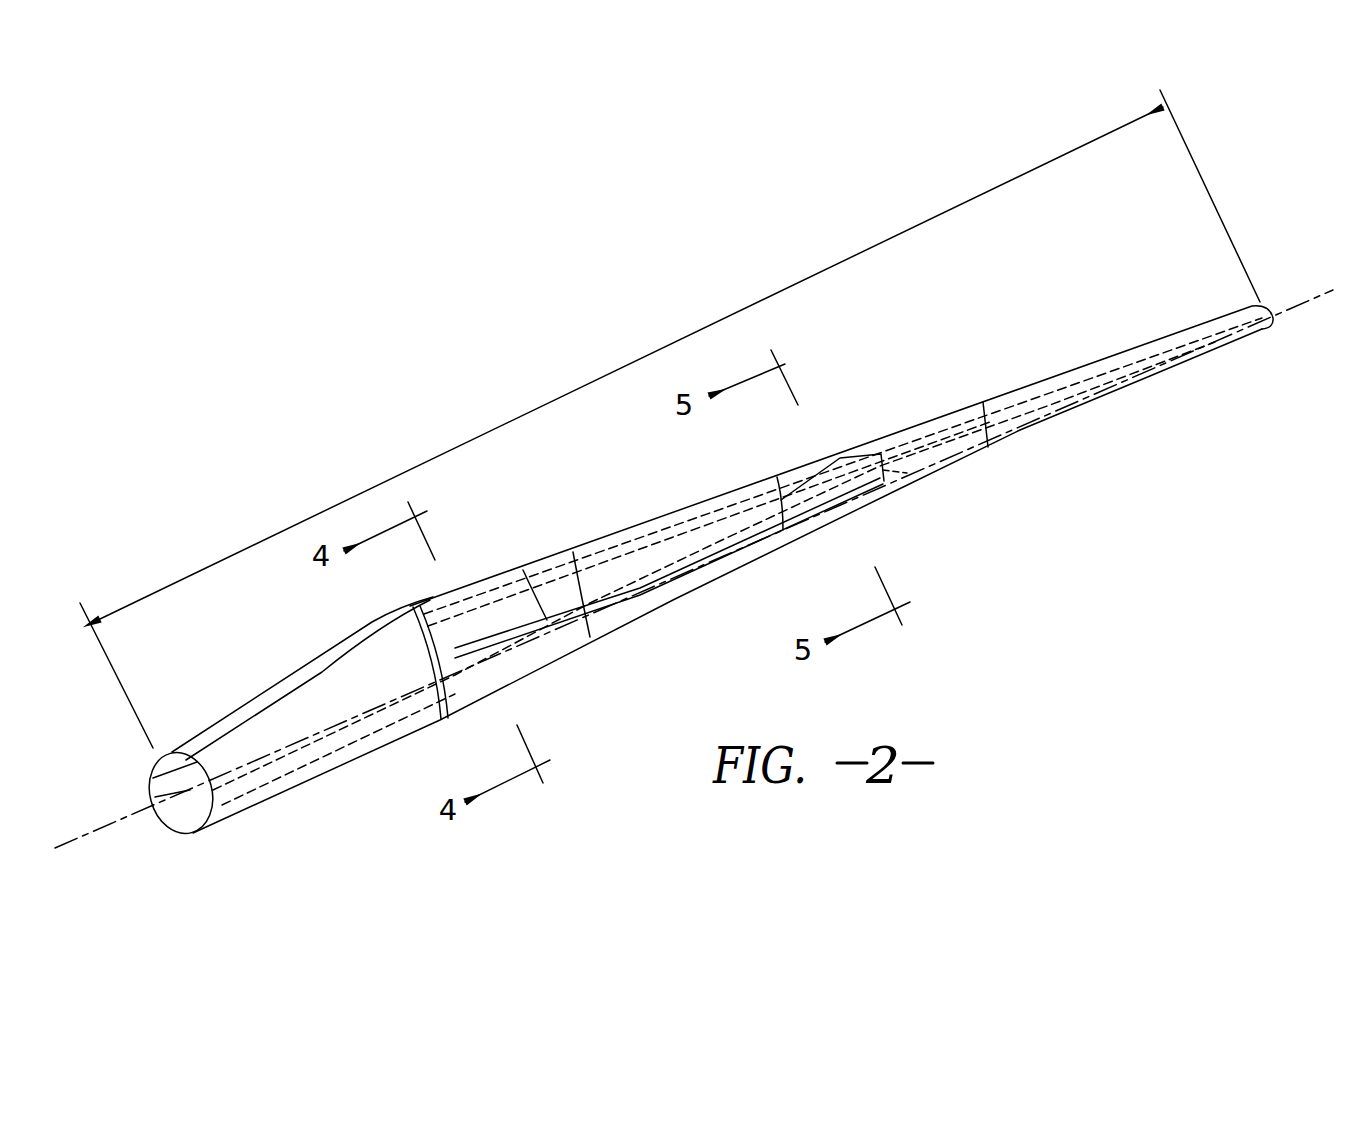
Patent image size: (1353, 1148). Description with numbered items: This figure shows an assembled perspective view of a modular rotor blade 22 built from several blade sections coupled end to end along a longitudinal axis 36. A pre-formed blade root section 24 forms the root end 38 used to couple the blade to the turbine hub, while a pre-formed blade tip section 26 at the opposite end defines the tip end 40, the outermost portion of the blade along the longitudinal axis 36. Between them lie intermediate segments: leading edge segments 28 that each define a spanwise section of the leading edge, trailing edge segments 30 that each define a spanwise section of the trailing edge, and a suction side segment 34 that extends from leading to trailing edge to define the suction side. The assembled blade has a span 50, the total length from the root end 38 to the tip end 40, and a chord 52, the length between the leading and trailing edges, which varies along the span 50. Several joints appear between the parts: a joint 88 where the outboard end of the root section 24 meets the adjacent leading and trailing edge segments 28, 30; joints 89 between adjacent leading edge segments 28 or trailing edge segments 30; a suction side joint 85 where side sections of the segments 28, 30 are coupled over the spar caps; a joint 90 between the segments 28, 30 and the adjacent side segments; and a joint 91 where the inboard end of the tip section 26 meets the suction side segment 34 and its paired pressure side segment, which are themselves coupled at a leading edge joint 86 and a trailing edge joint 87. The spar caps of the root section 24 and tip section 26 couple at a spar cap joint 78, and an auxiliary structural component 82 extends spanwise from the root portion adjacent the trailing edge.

The modular rotor blade 22 is at (350, 379).
The blade root section 24 is at (188, 736).
The blade tip section 26 is at (1140, 392).
The leading edge segment 28 is at (670, 600).
The trailing edge segment 30 is at (490, 587).
The suction side segment 34 is at (937, 432).
The longitudinal axis 36 is at (118, 845).
The root end 38 is at (200, 835).
The tip end 40 is at (1272, 320).
The span 50 is at (642, 350).
The chord 52 is at (641, 621).
The spar cap joint 78 is at (907, 474).
The auxiliary structural component 82 is at (655, 541).
The suction side joint 85 is at (710, 553).
The leading edge joint 86 is at (967, 463).
The trailing edge joint 87 is at (890, 435).
The root joint 88 is at (425, 652).
The segment joint 89 is at (578, 551).
The side segment joint 90 is at (780, 507).
The tip joint 91 is at (993, 407).